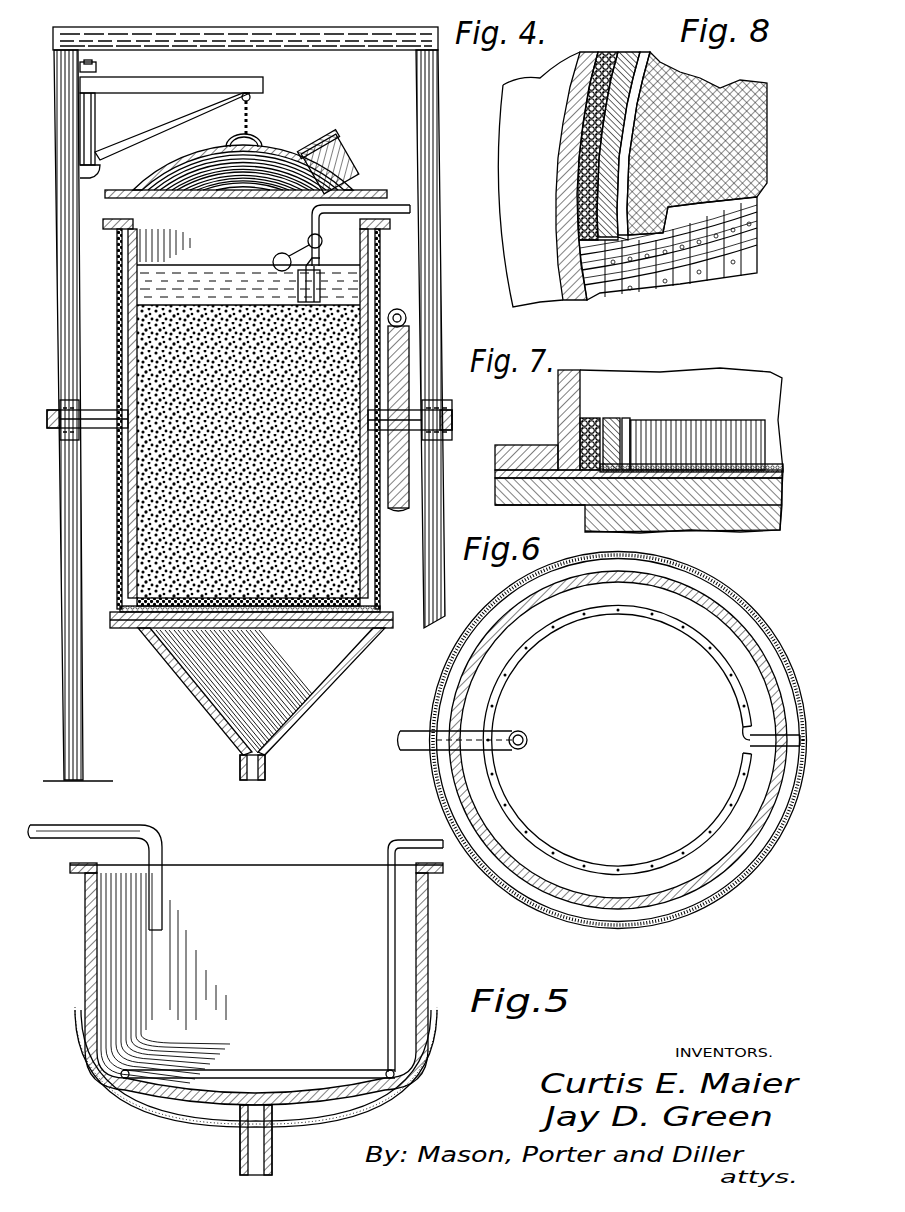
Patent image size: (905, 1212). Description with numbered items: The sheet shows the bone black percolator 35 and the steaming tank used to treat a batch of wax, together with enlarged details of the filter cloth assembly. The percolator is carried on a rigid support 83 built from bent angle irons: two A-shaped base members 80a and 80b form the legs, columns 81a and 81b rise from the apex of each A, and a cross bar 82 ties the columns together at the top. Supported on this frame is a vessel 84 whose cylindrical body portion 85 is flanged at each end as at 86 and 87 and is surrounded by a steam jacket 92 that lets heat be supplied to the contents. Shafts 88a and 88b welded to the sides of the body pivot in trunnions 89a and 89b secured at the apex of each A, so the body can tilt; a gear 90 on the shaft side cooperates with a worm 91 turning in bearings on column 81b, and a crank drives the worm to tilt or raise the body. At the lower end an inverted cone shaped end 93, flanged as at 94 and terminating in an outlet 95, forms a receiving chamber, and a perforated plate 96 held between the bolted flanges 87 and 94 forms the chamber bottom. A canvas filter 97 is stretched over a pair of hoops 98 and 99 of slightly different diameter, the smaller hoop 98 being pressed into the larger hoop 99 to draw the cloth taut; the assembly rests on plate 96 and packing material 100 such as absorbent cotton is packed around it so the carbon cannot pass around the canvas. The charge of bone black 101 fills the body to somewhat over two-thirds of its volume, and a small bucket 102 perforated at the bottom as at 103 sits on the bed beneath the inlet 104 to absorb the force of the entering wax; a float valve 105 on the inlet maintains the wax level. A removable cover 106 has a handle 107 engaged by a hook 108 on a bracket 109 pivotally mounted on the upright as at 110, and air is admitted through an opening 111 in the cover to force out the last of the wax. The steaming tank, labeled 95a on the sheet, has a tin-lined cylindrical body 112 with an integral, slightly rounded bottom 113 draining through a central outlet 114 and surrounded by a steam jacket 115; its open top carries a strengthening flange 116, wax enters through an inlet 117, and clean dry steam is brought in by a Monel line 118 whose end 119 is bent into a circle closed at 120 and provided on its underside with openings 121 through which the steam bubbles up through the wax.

In FIG. 4, the percolator 35 is at (449, 284).
In FIG. 4, the A-shaped base member 80a is at (78, 688).
In FIG. 4, the A-shaped base member 80b is at (444, 596).
In FIG. 4, the column 81a is at (72, 318).
In FIG. 4, the column 81b is at (441, 166).
In FIG. 4, the cross bar 82 is at (360, 50).
In FIG. 4, the rigid support 83 is at (443, 486).
In FIG. 4, the vessel 84 is at (390, 256).
In FIG. 4, the cylindrical body portion 85 is at (368, 290).
In FIG. 8, the cylindrical body portion 85 is at (585, 110).
In FIG. 7, the cylindrical body portion 85 is at (572, 372).
In FIG. 4, the flange 86 is at (392, 226).
In FIG. 4, the flange 87 is at (388, 611).
In FIG. 8, the flange 87 is at (510, 180).
In FIG. 7, the flange 87 is at (505, 452).
In FIG. 4, the shaft 88a is at (96, 410).
In FIG. 4, the shaft 88b is at (434, 404).
In FIG. 4, the trunnion 89a is at (70, 432).
In FIG. 4, the trunnion 89b is at (440, 418).
In FIG. 4, the gear 90 is at (405, 514).
In FIG. 4, the worm 91 is at (400, 306).
In FIG. 4, the steam jacket 92 is at (125, 270).
In FIG. 4, the inverted cone shaped end 93 is at (322, 683).
In FIG. 4, the flange 94 is at (380, 628).
In FIG. 7, the flange 94 is at (496, 496).
In FIG. 4, the outlet 95 is at (238, 769).
In FIG. 5, the inner vessel 95a is at (442, 936).
In FIG. 4, the perforated plate 96 is at (302, 614).
In FIG. 8, the perforated plate 96 is at (708, 280).
In FIG. 7, the perforated plate 96 is at (725, 470).
In FIG. 4, the filter 97 is at (274, 612).
In FIG. 8, the filter 97 is at (748, 172).
In FIG. 7, the filter 97 is at (722, 470).
In FIG. 8, the hoop 98 is at (640, 94).
In FIG. 7, the hoop 98 is at (628, 420).
In FIG. 8, the hoop 99 is at (632, 52).
In FIG. 7, the hoop 99 is at (612, 418).
In FIG. 8, the packing material 100 is at (582, 138).
In FIG. 7, the packing material 100 is at (590, 418).
In FIG. 4, the bone black 101 is at (152, 494).
In FIG. 4, the bucket 102 is at (322, 275).
In FIG. 4, the perforations 103 is at (298, 292).
In FIG. 4, the inlet 104 is at (311, 210).
In FIG. 4, the float valve 105 is at (307, 240).
In FIG. 4, the removable cover 106 is at (286, 150).
In FIG. 4, the handle 107 is at (250, 130).
In FIG. 4, the hook 108 is at (230, 141).
In FIG. 4, the bracket 109 is at (266, 83).
In FIG. 4, the pivot 110 is at (106, 68).
In FIG. 4, the opening 111 is at (346, 140).
In FIG. 6, the cylindrical body 112 is at (584, 900).
In FIG. 5, the cylindrical body 112 is at (430, 958).
In FIG. 5, the bottom 113 is at (405, 1080).
In FIG. 5, the outlet 114 is at (240, 1154).
In FIG. 5, the steam jacket 115 is at (370, 1105).
In FIG. 6, the strengthening flange 116 is at (432, 783).
In FIG. 5, the strengthening flange 116 is at (443, 873).
In FIG. 6, the inlet 117 is at (505, 732).
In FIG. 5, the inlet 117 is at (160, 890).
In FIG. 6, the steam line 118 is at (765, 756).
In FIG. 5, the steam line 118 is at (405, 840).
In FIG. 6, the circular end portion 119 is at (510, 808).
In FIG. 5, the circular end portion 119 is at (222, 1066).
In FIG. 6, the closed end 120 is at (745, 733).
In FIG. 6, the openings 121 is at (538, 838).